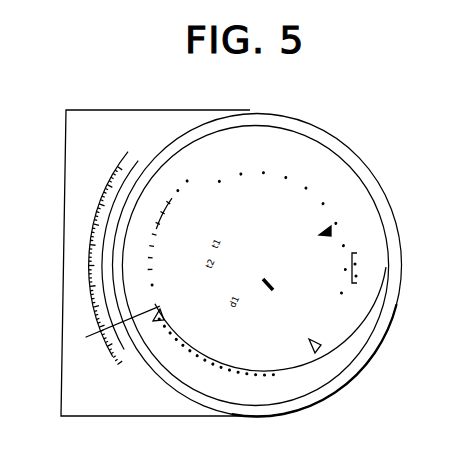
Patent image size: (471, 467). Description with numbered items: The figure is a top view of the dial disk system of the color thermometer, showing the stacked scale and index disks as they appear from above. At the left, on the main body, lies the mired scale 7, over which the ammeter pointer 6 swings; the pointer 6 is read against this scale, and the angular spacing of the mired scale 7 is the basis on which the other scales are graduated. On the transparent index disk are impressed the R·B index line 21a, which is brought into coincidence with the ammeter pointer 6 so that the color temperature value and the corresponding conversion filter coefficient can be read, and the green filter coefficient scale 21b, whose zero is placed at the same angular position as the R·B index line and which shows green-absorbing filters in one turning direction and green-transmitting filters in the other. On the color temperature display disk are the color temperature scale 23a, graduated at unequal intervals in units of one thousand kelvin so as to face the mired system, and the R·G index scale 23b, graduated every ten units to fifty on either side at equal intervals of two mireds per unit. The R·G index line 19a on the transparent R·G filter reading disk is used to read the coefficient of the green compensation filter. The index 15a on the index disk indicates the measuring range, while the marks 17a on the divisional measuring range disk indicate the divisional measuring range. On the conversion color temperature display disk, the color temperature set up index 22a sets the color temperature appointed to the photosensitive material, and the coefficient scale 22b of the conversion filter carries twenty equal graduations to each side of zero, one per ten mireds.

The mired scale 7 is at (100, 193).
The ammeter pointer 6 is at (90, 336).
The R·B index line 21a is at (150, 333).
The green filter coefficient scale 21b is at (286, 190).
The color temperature scale 23a is at (157, 319).
The R·G index scale 23b is at (230, 177).
The R·G index line 19a is at (336, 230).
The index 15a is at (269, 286).
The marks 17a is at (279, 291).
The color temperature set up index 22a is at (313, 341).
The coefficient scale of the color temperature conversion filter 22b is at (322, 369).